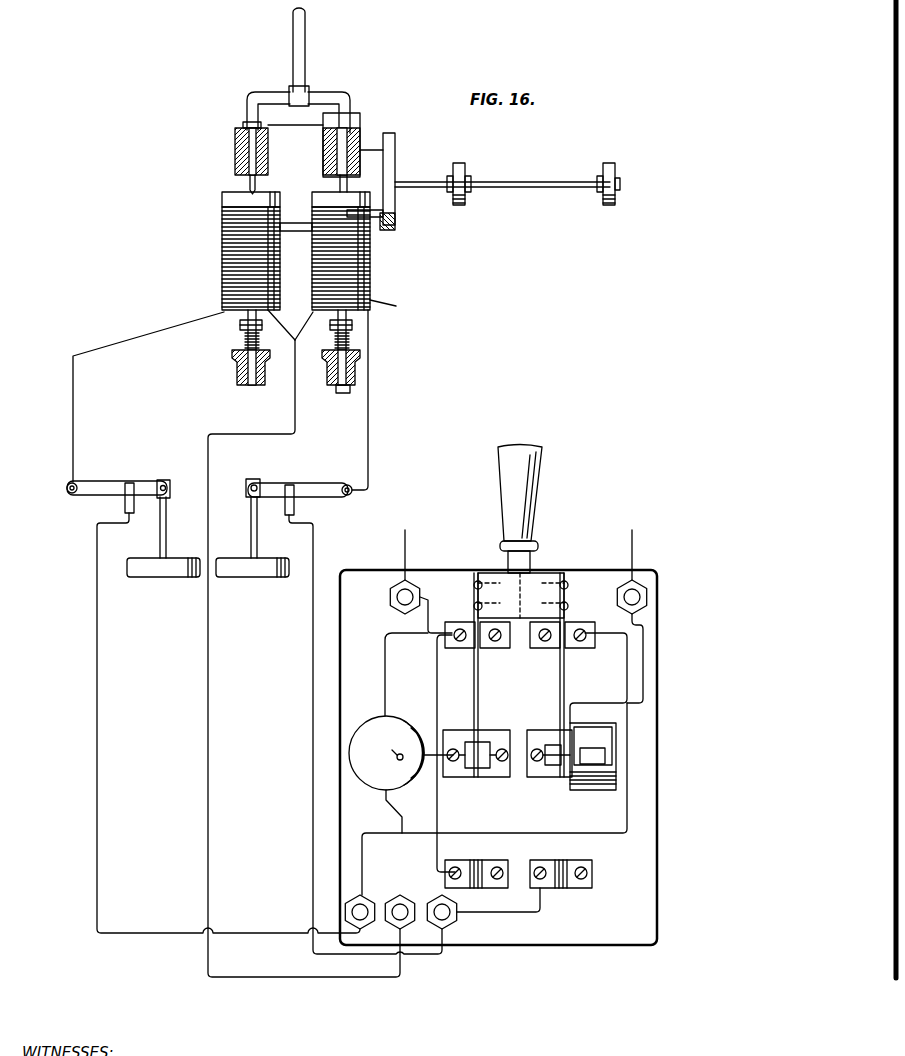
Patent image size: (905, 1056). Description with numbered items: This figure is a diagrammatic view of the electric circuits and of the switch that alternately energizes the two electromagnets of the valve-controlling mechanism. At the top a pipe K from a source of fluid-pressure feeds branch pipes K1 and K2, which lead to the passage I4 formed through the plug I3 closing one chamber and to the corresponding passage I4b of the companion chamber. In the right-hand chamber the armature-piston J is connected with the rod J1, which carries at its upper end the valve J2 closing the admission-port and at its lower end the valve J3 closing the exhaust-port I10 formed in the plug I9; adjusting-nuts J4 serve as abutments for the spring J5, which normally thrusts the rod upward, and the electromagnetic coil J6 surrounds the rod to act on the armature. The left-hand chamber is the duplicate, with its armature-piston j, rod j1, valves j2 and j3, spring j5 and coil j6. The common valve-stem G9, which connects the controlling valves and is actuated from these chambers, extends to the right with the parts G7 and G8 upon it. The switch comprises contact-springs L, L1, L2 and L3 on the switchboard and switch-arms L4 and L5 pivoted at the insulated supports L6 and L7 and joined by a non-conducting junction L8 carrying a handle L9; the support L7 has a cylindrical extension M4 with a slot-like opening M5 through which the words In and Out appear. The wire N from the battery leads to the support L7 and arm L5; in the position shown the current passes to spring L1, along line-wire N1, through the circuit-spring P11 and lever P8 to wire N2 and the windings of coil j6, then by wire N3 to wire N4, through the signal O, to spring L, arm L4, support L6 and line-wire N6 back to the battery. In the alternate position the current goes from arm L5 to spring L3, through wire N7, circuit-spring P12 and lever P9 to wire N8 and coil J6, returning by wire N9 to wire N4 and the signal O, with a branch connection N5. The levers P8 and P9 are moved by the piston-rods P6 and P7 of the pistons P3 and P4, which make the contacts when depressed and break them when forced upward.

The pipe K is at (307, 50).
The branch pipe K2 is at (268, 88).
The branch pipe K1 is at (324, 100).
The passage or channel I4 is at (234, 155).
The plug I3 is at (357, 133).
The bracket plate I4b is at (362, 142).
The valve stem tip j2 is at (258, 190).
The valve J2 is at (350, 190).
The common valve-stem G9 is at (420, 178).
The gear disc G7 is at (466, 171).
The gear disc G8 is at (616, 171).
The solenoid cap j is at (221, 200).
The electromagnet j6 is at (222, 238).
The armature and piston J is at (311, 205).
The electromagnetic coil J6 is at (370, 247).
The plunger rod j1 is at (230, 312).
The nut j5 is at (262, 330).
The threaded stem j3 is at (244, 340).
The plug I9 is at (262, 368).
The exhaust-port I10 is at (351, 388).
The rod J1 is at (360, 310).
The adjusting-nuts J4 is at (389, 306).
The spring J5 is at (353, 326).
The valve J3 is at (350, 343).
The line-wire N2 is at (140, 346).
The line-wire N3 is at (284, 321).
The wire N9 is at (306, 327).
The wire N4 is at (294, 404).
The wire N8 is at (371, 400).
The switch-lever P8 is at (118, 479).
The circuit-spring P11 is at (124, 509).
The piston-rod P6 is at (167, 529).
The piston P3 is at (163, 567).
The switch-lever P9 is at (299, 479).
The circuit-spring P12 is at (295, 507).
The piston-rod P7 is at (258, 540).
The piston P4 is at (252, 567).
The line-wire N1 is at (346, 723).
The wire N7 is at (420, 743).
The line-wire N6 is at (421, 604).
The wire N is at (611, 614).
The handle L9 is at (520, 509).
The non-conducting junction L8 is at (521, 595).
The switch-arm L4 is at (488, 675).
The switch-arm L5 is at (552, 675).
The contact-spring L is at (477, 645).
The contact-spring L1 is at (562, 645).
The branch connection N5 is at (453, 753).
The signal O is at (401, 774).
The pivotal support L6 is at (476, 765).
The pivotal support L7 is at (549, 765).
The cylindrical extension M4 is at (598, 790).
The slot-like opening M5 is at (602, 750).
The contact-spring L2 is at (476, 863).
The contact-spring L3 is at (561, 863).